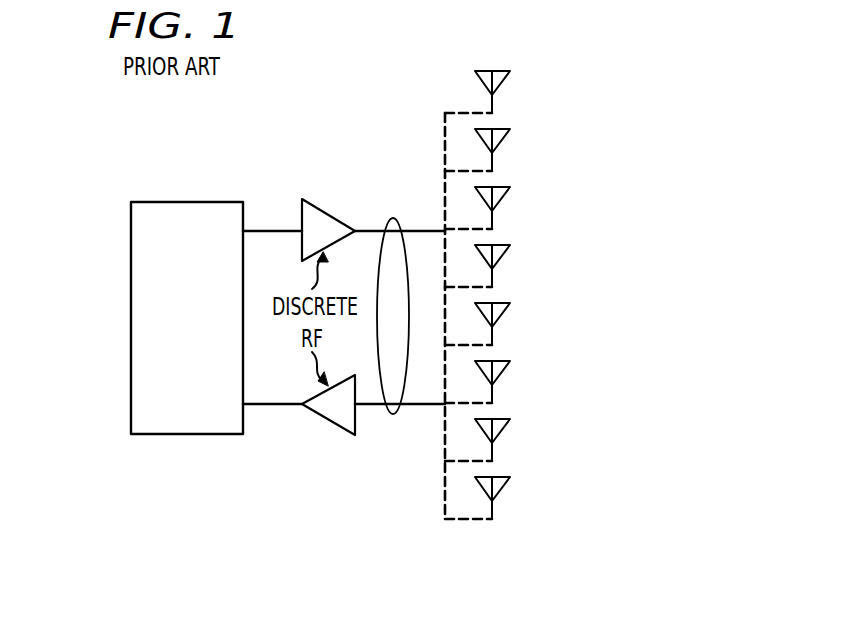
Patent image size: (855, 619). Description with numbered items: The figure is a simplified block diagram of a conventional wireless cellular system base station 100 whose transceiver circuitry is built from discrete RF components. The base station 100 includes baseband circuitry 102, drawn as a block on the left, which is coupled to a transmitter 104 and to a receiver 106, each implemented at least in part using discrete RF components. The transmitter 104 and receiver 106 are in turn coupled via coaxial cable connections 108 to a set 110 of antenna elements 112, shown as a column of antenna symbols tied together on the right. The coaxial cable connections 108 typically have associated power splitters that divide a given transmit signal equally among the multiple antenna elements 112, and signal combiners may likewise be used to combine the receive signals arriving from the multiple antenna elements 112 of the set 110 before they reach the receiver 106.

The base station 100 is at (672, 106).
The baseband circuitry 102 is at (188, 202).
The transmitter 104 is at (318, 206).
The receiver 106 is at (344, 430).
The coaxial cable connections 108 is at (394, 218).
The set of antenna elements 110 is at (507, 333).
The antenna element 112 is at (510, 80).